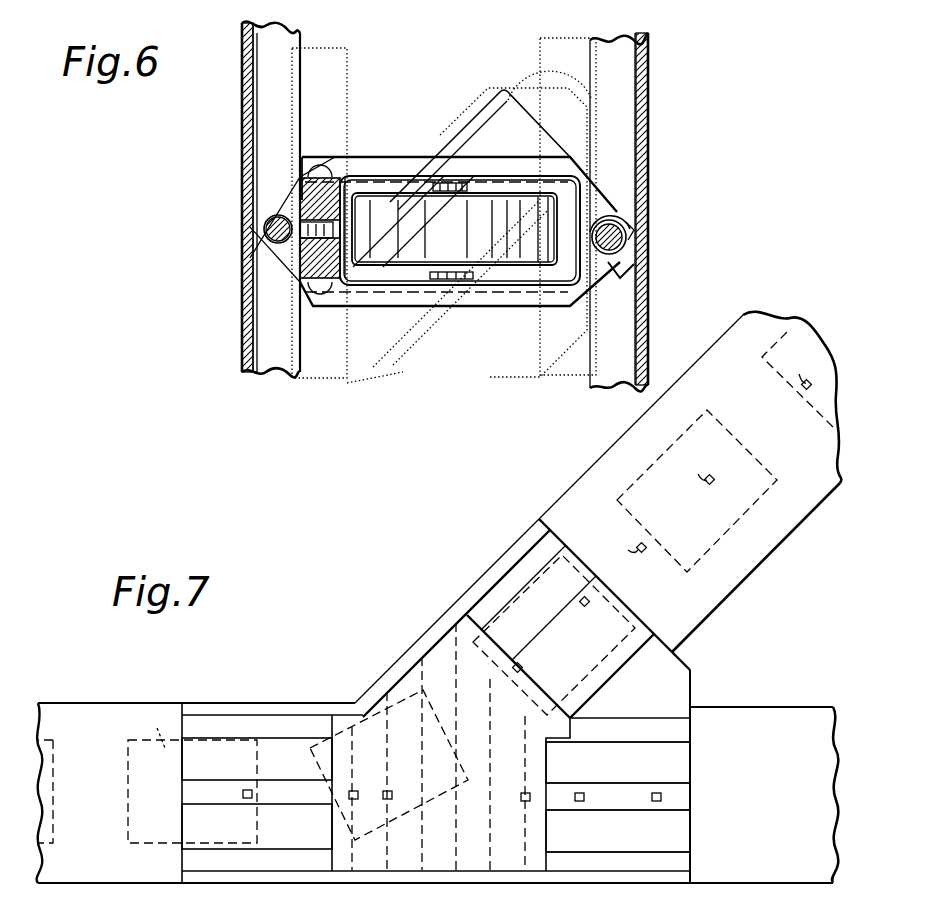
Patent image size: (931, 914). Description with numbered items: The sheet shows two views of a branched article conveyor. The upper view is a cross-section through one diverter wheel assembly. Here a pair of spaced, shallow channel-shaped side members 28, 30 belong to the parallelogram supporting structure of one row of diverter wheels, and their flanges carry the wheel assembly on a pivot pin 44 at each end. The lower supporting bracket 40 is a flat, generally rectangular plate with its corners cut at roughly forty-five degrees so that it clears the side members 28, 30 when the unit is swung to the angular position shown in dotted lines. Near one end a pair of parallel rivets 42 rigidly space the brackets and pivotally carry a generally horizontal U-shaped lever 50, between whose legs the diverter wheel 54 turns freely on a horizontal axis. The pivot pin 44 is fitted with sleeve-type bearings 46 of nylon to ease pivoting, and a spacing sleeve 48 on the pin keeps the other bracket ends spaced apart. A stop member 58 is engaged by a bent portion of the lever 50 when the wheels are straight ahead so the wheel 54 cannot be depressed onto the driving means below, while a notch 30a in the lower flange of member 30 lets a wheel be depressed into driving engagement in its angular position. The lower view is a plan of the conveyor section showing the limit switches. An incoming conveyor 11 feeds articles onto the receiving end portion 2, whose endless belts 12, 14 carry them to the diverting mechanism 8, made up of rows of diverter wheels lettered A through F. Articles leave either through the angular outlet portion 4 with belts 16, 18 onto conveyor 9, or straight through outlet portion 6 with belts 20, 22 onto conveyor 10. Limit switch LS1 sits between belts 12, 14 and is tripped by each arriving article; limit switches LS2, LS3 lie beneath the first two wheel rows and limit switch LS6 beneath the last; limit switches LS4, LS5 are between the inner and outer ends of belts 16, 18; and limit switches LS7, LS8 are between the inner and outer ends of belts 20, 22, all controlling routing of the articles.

In FIG. 7, the receiving end portion 2 is at (266, 695).
In FIG. 7, the outlet portion 4 is at (497, 555).
In FIG. 7, the outlet portion 6 is at (651, 705).
In FIG. 7, the diverting mechanism 8 is at (404, 648).
In FIG. 7, the conveyor 9 is at (622, 444).
In FIG. 7, the conveyor 10 is at (762, 718).
In FIG. 7, the incoming conveyor 11 is at (93, 705).
In FIG. 7, the endless conveyor belt 12 is at (257, 759).
In FIG. 7, the endless conveyor belt 14 is at (257, 826).
In FIG. 7, the endless belt 16 is at (511, 613).
In FIG. 7, the endless belt 18 is at (604, 657).
In FIG. 7, the endless belt 20 is at (642, 751).
In FIG. 7, the endless belt 22 is at (631, 851).
In FIG. 6, the side member 28 is at (243, 143).
In FIG. 6, the side member 30 is at (547, 48).
In FIG. 6, the notch 30a is at (604, 312).
In FIG. 6, the lower supporting bracket 40 is at (450, 128).
In FIG. 6, the rivet 42 is at (309, 193).
In FIG. 6, the pivot pin 44 is at (263, 230).
In FIG. 6, the sleeve-type bearing 46 is at (253, 252).
In FIG. 6, the spacing sleeve 48 is at (628, 216).
In FIG. 6, the U-shaped lever 50 is at (367, 175).
In FIG. 6, the wheel 54 is at (457, 233).
In FIG. 6, the stop member 58 is at (530, 80).
In FIG. 7, the limit switch LS1 is at (243, 794).
In FIG. 7, the limit switch LS2 is at (366, 786).
In FIG. 7, the limit switch LS3 is at (392, 793).
In FIG. 7, the limit switch LS4 is at (521, 665).
In FIG. 7, the limit switch LS5 is at (581, 601).
In FIG. 7, the limit switch LS6 is at (521, 796).
In FIG. 7, the limit switch LS7 is at (585, 796).
In FIG. 7, the limit switch LS8 is at (661, 798).